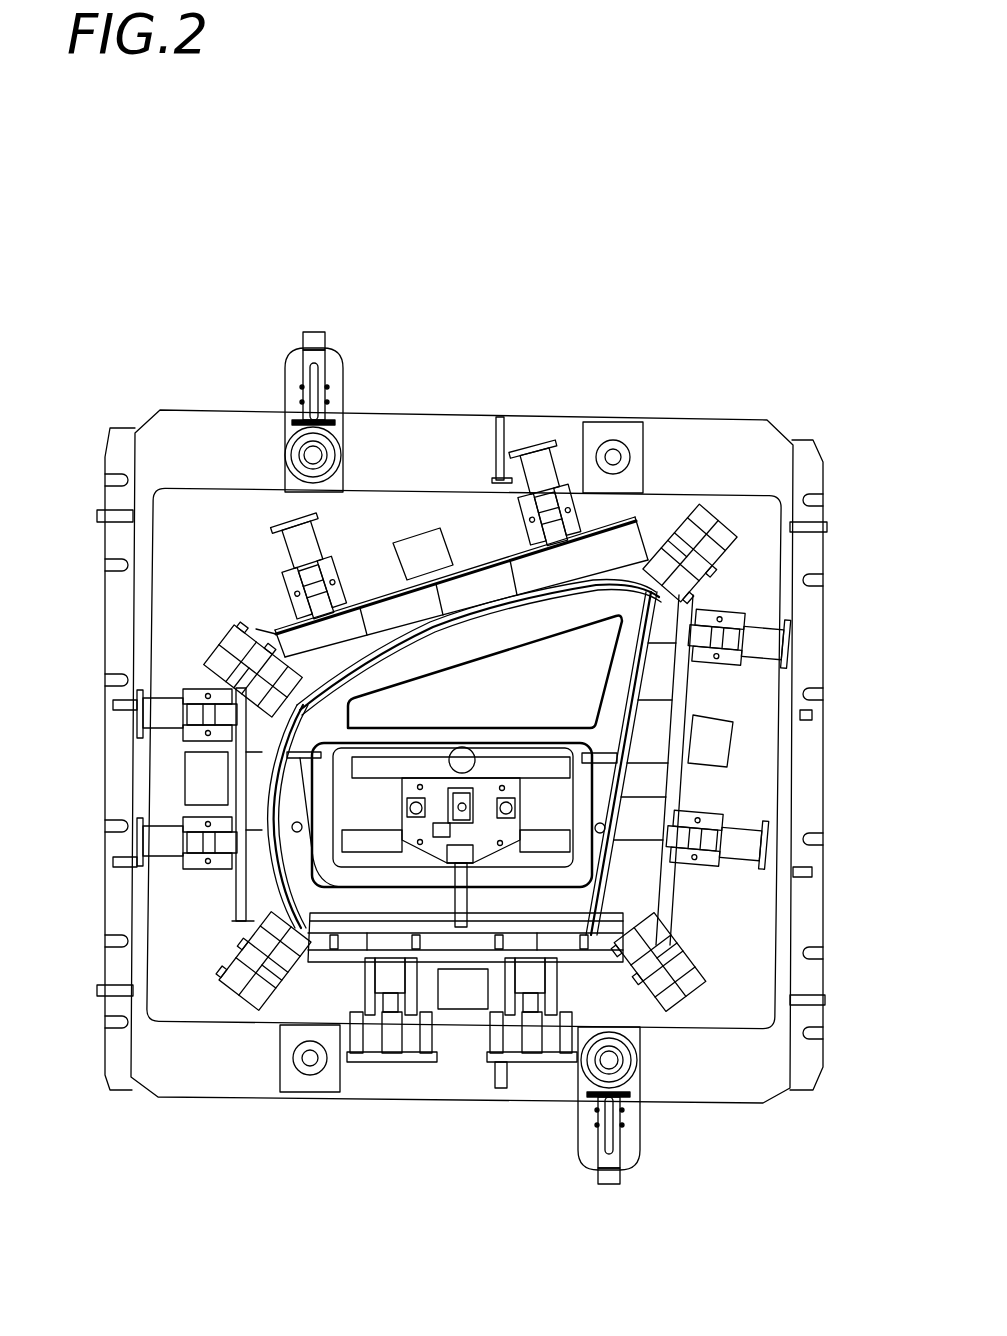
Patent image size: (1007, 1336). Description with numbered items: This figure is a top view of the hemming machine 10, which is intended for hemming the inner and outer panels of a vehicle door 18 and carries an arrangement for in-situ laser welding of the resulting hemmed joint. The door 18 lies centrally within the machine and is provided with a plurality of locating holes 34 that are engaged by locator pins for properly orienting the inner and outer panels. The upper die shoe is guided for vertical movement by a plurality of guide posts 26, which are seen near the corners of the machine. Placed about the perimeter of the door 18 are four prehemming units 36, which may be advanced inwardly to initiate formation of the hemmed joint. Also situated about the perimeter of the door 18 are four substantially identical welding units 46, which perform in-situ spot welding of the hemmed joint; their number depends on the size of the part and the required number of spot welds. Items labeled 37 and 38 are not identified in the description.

The hemming machine 10 is at (132, 290).
The vehicle door 18 is at (553, 613).
The guide posts 26 is at (594, 430).
The locating holes 34 is at (292, 828).
The prehemming units 36 is at (380, 557).
The clamp 37 is at (325, 575).
The slide block 38 is at (300, 655).
The welding units 46 is at (425, 545).